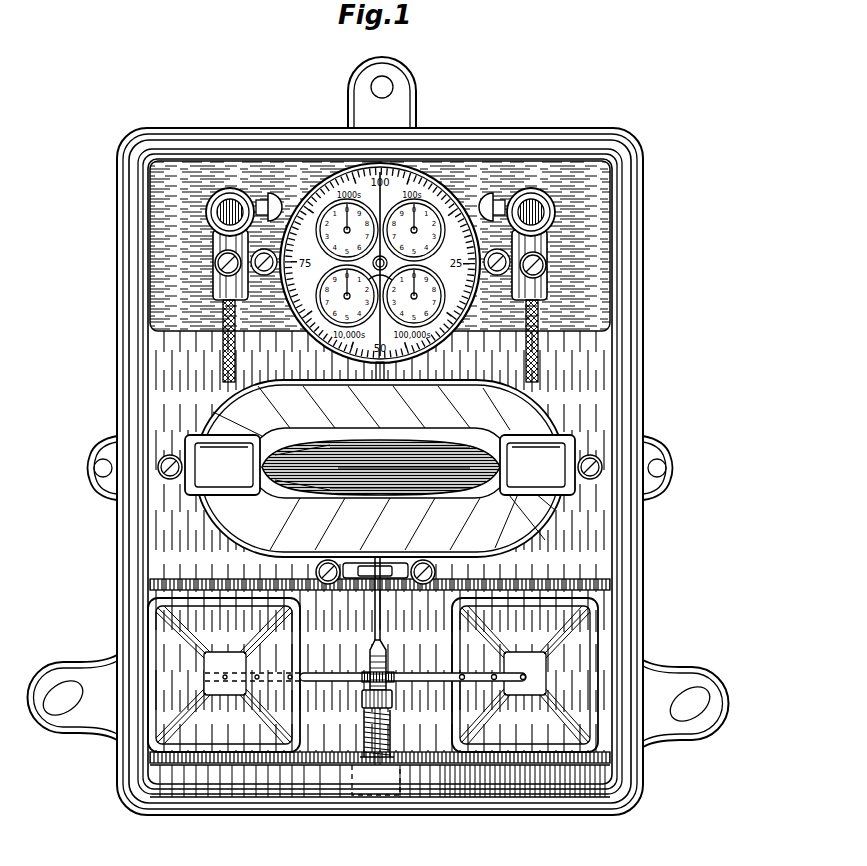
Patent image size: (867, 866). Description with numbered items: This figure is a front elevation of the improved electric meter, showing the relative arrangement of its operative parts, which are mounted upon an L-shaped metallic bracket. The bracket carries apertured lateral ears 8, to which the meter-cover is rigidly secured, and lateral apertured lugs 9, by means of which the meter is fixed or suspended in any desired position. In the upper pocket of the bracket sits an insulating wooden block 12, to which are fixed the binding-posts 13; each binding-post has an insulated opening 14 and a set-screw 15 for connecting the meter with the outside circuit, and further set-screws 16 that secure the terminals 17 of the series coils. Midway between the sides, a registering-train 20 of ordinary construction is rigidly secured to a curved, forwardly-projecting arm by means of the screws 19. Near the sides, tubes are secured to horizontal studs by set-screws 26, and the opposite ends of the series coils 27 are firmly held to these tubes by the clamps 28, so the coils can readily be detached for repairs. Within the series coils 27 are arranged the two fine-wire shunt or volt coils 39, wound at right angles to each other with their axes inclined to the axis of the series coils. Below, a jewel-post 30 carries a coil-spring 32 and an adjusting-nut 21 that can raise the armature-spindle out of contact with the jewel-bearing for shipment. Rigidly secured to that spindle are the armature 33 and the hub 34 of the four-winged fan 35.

The apertured lateral ears 8 is at (92, 448).
The lateral apertured lugs 9 is at (412, 88).
The insulating wooden block 12 is at (606, 218).
The binding-posts 13 is at (220, 243).
The insulated opening 14 is at (213, 211).
The set-screw 15 is at (273, 192).
The set-screws 16 is at (216, 271).
The terminals of the series coils 17 is at (224, 350).
The screws 19 is at (508, 275).
The registering-train 20 is at (331, 127).
The adjusting-nut 21 is at (393, 700).
The set-screws 26 is at (160, 470).
The series coils 27 is at (532, 412).
The clamps 28 is at (192, 489).
The jewel-post 30 is at (393, 742).
The coil-spring 32 is at (393, 722).
The armature 33 is at (370, 470).
The hub 34 is at (388, 662).
The four-winged fan 35 is at (470, 633).
The shunt or volt coils 39 is at (447, 458).